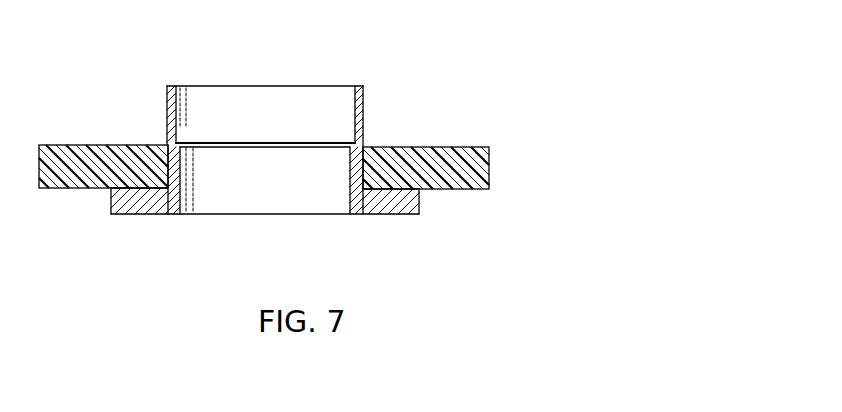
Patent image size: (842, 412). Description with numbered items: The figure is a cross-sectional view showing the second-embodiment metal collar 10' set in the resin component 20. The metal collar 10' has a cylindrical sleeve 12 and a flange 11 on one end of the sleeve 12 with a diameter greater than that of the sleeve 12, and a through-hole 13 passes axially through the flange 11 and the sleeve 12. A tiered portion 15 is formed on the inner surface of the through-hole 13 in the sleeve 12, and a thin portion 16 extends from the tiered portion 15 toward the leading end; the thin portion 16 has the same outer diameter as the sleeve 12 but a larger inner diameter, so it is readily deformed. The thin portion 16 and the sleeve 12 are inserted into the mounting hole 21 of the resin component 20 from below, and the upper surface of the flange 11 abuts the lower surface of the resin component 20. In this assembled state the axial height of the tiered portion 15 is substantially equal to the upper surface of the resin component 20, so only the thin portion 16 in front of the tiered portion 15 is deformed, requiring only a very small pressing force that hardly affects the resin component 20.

The metal collar 10' is at (280, 145).
The flange 11 is at (393, 205).
The cylindrical sleeve 12 is at (363, 160).
The through-hole 13 is at (350, 179).
The tiered portion 15 is at (352, 142).
The thin portion 16 is at (358, 102).
The resin component 20 is at (470, 189).
The mounting hole 21 is at (168, 165).